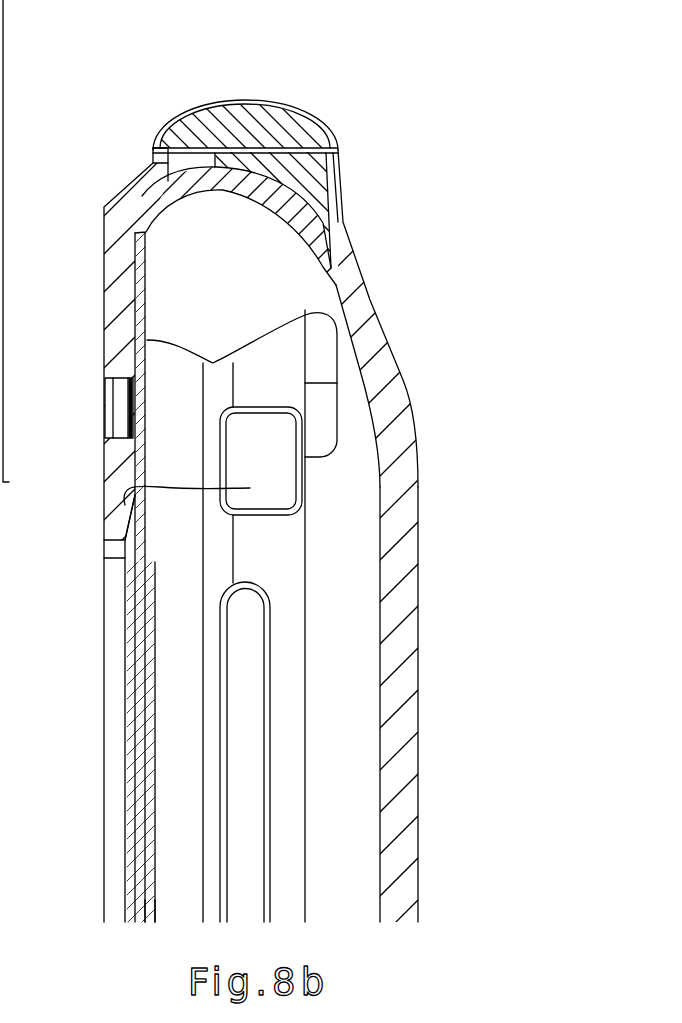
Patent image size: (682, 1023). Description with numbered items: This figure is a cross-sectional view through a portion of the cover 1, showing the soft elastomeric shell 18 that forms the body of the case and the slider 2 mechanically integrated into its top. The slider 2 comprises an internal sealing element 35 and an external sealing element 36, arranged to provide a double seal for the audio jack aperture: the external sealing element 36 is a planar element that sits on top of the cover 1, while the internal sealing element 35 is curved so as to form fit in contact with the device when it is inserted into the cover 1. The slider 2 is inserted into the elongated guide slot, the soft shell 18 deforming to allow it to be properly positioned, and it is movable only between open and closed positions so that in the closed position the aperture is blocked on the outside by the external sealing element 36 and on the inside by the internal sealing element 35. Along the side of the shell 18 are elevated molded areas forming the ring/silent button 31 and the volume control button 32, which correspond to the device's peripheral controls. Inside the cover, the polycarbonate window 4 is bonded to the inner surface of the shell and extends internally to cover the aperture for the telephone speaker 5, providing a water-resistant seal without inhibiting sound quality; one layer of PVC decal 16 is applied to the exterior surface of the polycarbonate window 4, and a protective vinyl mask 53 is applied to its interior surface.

The cover 1 is at (370, 272).
The slider 2 is at (327, 120).
The polycarbonate window 4 is at (123, 622).
The telephone speaker 5 is at (105, 430).
The PVC decal 16 is at (135, 685).
The elastomeric shell 18 is at (418, 775).
The ring/silent button 31 is at (133, 547).
The volume control button 32 is at (247, 745).
The internal sealing element 35 is at (170, 180).
The external sealing element 36 is at (240, 128).
The protective vinyl mask 53 is at (147, 915).